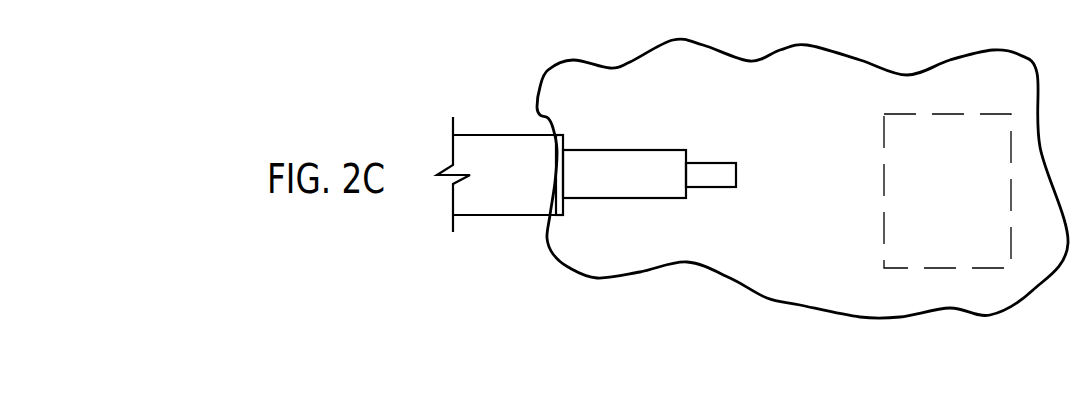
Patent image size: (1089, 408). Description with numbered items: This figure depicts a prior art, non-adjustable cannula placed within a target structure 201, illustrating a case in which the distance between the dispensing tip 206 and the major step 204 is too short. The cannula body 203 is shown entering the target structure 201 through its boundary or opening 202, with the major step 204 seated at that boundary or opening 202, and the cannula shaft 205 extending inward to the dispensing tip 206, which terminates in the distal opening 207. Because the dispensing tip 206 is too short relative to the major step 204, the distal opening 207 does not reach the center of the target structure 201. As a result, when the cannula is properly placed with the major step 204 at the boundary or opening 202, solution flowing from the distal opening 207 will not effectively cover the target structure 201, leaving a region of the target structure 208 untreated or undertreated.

The target structure 201 is at (741, 105).
The boundary or opening of the target structure 202 is at (555, 63).
The cable 203 is at (483, 203).
The major step 204 is at (563, 210).
The connector body 205 is at (637, 182).
The dispensing tip 206 is at (707, 174).
The distal opening 207 is at (737, 172).
The region of the target structure 208 is at (966, 200).